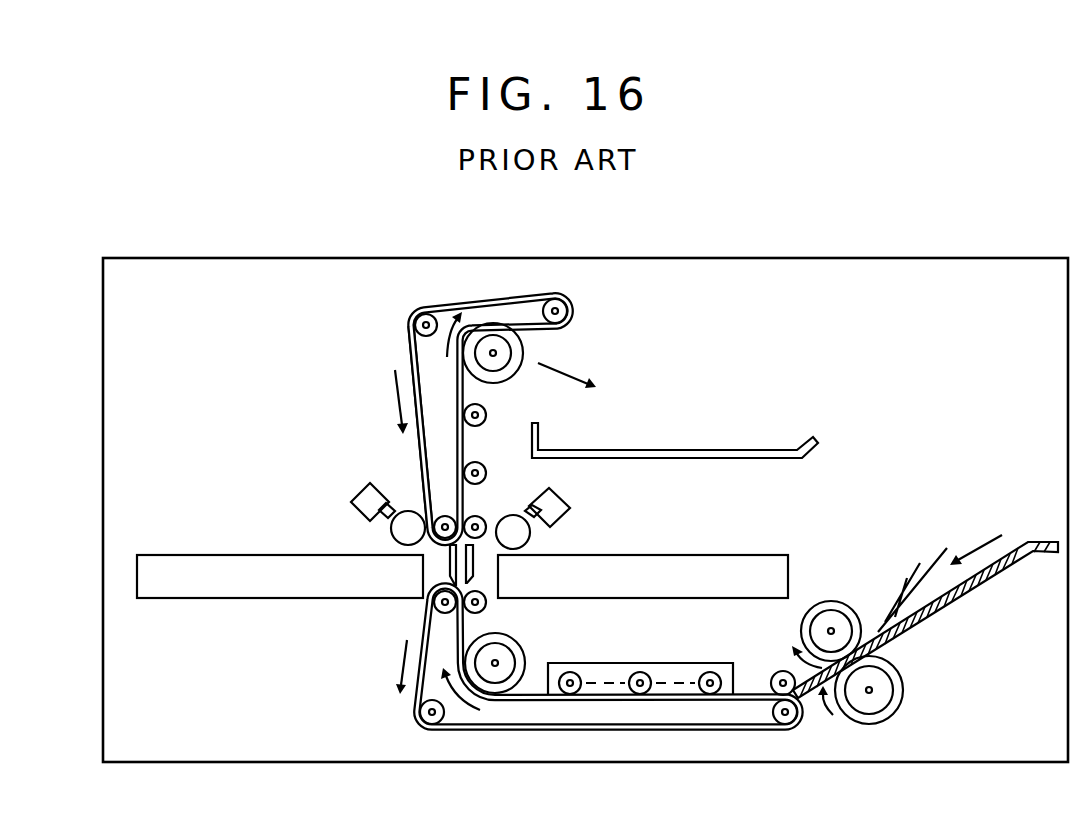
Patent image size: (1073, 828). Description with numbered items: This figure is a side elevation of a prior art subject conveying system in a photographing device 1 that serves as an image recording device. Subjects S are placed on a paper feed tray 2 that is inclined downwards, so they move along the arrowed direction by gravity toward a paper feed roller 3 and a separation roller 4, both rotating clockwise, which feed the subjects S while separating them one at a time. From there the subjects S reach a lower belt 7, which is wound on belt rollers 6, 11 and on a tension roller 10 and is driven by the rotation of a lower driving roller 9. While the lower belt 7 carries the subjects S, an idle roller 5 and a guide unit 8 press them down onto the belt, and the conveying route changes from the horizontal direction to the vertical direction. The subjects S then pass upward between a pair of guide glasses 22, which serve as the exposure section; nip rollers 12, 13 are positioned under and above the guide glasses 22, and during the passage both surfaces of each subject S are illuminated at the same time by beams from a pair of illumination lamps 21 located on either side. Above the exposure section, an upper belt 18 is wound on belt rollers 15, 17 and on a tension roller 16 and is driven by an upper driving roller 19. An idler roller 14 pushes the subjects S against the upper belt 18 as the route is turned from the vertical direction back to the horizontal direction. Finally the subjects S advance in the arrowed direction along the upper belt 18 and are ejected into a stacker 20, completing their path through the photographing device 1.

The photographing device 1 is at (244, 278).
The paper feed tray 2 is at (967, 595).
The paper feed roller 3 is at (815, 604).
The separation roller 4 is at (903, 688).
The idle roller 5 is at (775, 675).
The belt roller 6 is at (783, 733).
The lower belt 7 is at (573, 733).
The guide unit 8 is at (610, 673).
The lower driving roller 9 is at (527, 650).
The tension roller 10 is at (428, 724).
The belt roller 11 is at (441, 609).
The nip roller 12 is at (483, 610).
The nip roller 13 is at (483, 518).
The idler roller 14 is at (473, 427).
The belt roller 15 is at (430, 518).
The tension roller 16 is at (413, 318).
The belt roller 17 is at (570, 312).
The upper belt 18 is at (453, 307).
The upper driving roller 19 is at (503, 383).
The stacker 20 is at (675, 450).
The illumination lamps 21 is at (360, 492).
The guide glasses 22 is at (480, 565).
The subject S is at (887, 610).